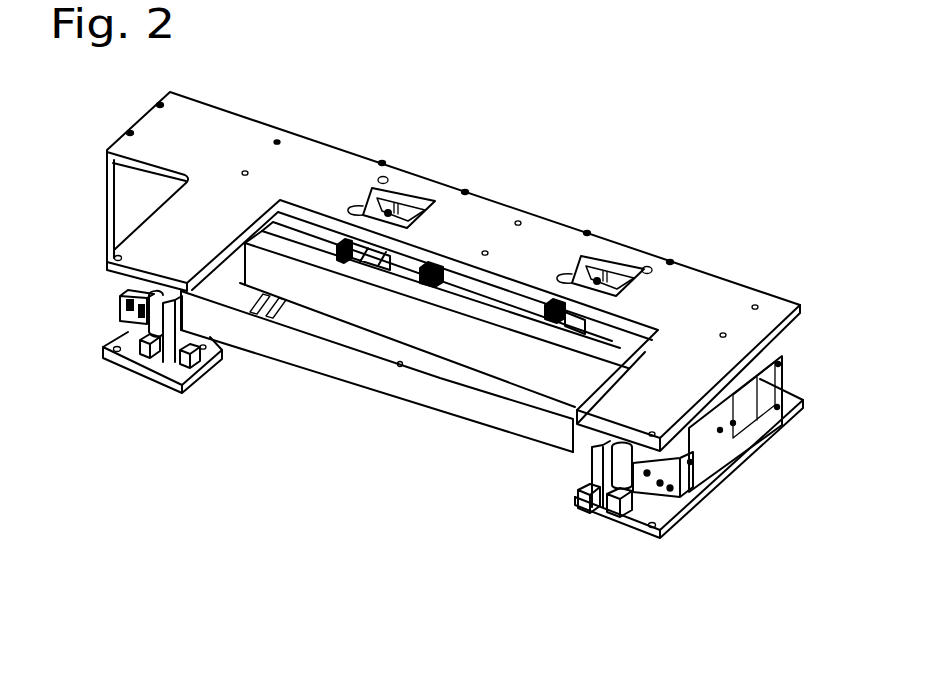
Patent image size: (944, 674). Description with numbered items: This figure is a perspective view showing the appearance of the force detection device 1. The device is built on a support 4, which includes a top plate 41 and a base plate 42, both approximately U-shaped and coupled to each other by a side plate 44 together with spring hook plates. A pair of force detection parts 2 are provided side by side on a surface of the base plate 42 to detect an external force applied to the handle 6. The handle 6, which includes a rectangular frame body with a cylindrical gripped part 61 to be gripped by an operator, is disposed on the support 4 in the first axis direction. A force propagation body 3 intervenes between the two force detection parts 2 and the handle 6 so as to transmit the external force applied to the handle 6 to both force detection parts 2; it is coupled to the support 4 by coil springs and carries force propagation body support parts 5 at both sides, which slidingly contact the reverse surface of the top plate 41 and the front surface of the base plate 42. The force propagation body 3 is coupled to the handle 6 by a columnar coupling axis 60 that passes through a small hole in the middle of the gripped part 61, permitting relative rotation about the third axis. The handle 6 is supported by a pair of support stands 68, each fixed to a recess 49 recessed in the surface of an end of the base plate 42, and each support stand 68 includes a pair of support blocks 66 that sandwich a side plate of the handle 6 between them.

The force detection device 1 is at (699, 224).
The force detection part 2 is at (392, 207).
The force propagation body 3 is at (684, 480).
The support 4 is at (840, 318).
The force propagation body support part 5 is at (705, 447).
The handle 6 is at (463, 405).
The top plate 41 is at (766, 333).
The base plate 42 is at (774, 427).
The side plate 44 is at (115, 203).
The recess 49 is at (162, 368).
The coupling axis 60 is at (401, 367).
The gripped part 61 is at (333, 370).
The support block 66 is at (117, 368).
The support stand 68 is at (178, 470).